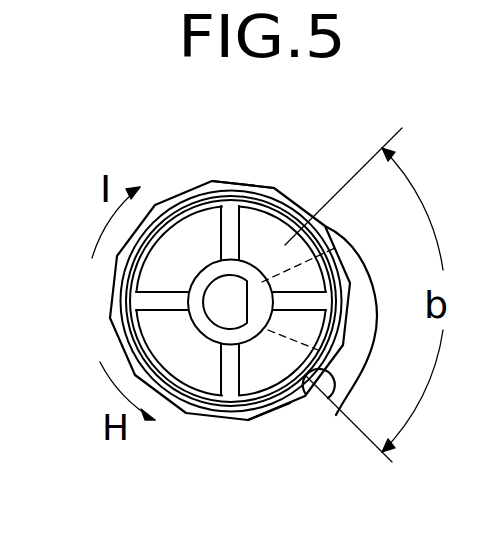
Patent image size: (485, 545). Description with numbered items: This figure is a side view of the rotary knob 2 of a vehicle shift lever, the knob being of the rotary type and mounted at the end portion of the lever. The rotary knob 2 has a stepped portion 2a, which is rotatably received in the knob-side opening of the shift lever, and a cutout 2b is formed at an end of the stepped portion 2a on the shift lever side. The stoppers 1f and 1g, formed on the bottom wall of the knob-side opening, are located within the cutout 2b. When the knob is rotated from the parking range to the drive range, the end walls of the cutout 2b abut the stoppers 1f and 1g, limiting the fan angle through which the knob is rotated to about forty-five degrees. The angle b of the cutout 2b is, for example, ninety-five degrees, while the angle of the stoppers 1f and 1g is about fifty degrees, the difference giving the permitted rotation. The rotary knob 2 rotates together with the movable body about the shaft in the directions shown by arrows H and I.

The rotary knob 2 is at (112, 336).
The stepped portion 2a is at (240, 181).
The cutout 2b is at (328, 398).
The stopper 1g is at (280, 270).
The stopper 1f is at (270, 410).